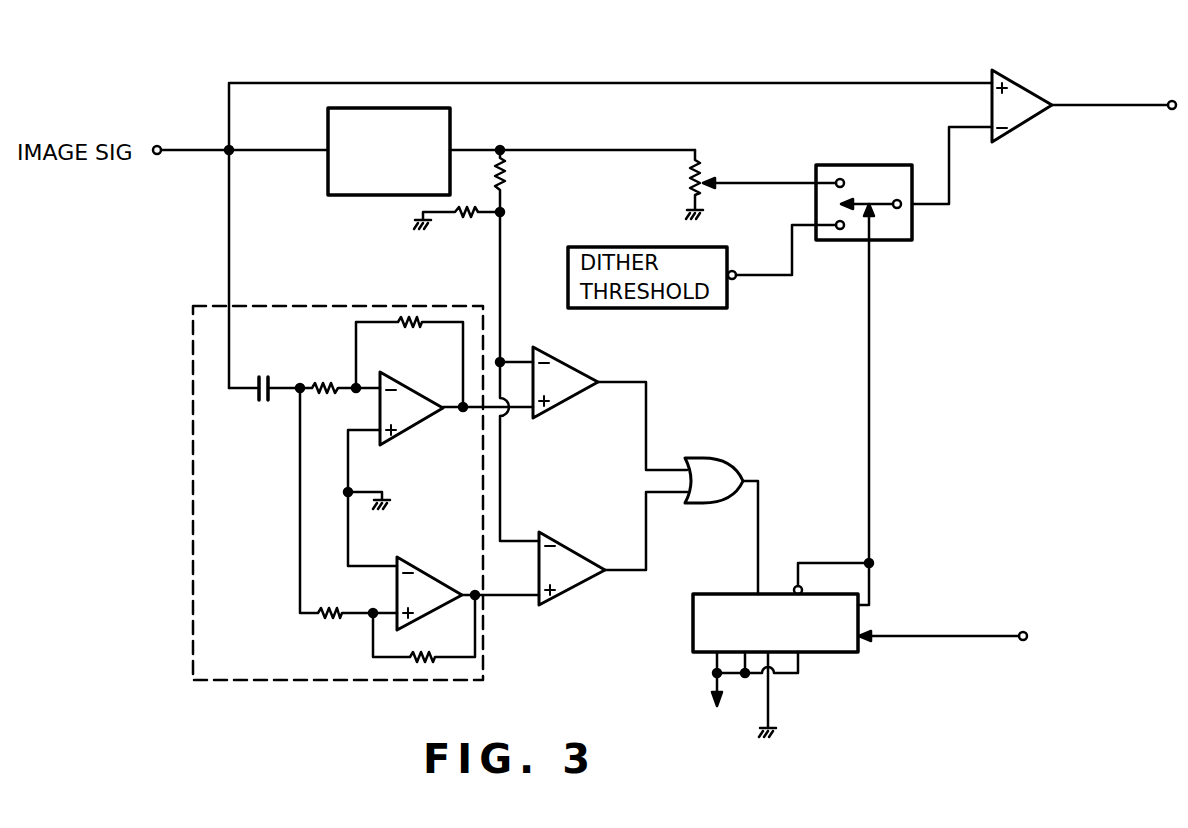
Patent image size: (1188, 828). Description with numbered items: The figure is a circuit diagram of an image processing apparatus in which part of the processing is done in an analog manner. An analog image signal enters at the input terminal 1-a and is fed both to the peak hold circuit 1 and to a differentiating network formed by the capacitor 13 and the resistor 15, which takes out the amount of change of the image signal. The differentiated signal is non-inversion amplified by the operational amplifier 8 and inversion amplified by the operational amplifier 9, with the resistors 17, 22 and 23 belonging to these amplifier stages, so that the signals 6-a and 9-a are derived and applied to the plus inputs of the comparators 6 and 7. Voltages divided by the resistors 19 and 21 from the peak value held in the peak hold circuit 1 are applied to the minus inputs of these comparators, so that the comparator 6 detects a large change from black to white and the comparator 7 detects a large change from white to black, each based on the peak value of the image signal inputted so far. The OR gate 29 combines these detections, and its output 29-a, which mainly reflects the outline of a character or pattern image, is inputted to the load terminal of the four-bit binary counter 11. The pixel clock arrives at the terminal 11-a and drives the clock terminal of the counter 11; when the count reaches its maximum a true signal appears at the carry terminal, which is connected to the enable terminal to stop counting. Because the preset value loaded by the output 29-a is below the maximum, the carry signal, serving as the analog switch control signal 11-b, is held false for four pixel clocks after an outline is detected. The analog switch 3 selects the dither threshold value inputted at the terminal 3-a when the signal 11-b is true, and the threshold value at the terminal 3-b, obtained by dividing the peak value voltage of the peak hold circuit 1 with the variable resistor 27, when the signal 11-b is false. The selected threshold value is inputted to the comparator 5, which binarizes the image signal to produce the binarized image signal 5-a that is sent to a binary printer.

The peak hold circuit 1 is at (452, 112).
The input terminal 1-a is at (157, 144).
The analog switch 3 is at (868, 162).
The dither threshold terminal 3-a is at (766, 278).
The non-dither threshold terminal 3-b is at (750, 186).
The comparator 5 is at (1028, 92).
The binarized image signal 5-a is at (1108, 107).
The comparator 6 is at (548, 545).
The non-inversion amplified signal 6-a is at (520, 597).
The comparator 7 is at (570, 360).
The operational amplifier 8 is at (428, 574).
The operational amplifier 9 is at (424, 392).
The inversion amplified signal 9-a is at (456, 412).
The 4-bit binary counter 11 is at (692, 636).
The pixel clock terminal 11-a is at (1020, 630).
The analog switch control signal 11-b is at (871, 528).
The capacitor 13 is at (262, 402).
The resistor 15 is at (326, 380).
The resistor 17 is at (404, 316).
The resistor 19 is at (462, 220).
The resistor 21 is at (506, 172).
The resistor 22 is at (324, 608).
The resistor 23 is at (412, 667).
The variable resistor 27 is at (712, 180).
The OR gate 29 is at (722, 458).
The OR gate output 29-a is at (760, 532).